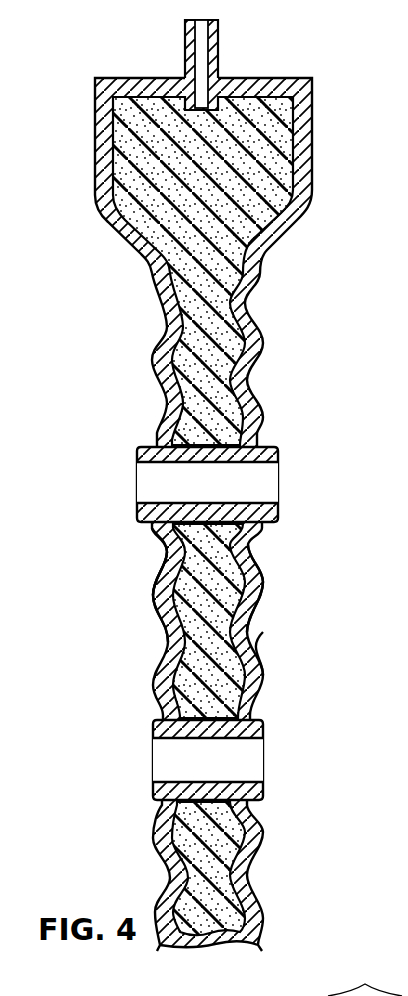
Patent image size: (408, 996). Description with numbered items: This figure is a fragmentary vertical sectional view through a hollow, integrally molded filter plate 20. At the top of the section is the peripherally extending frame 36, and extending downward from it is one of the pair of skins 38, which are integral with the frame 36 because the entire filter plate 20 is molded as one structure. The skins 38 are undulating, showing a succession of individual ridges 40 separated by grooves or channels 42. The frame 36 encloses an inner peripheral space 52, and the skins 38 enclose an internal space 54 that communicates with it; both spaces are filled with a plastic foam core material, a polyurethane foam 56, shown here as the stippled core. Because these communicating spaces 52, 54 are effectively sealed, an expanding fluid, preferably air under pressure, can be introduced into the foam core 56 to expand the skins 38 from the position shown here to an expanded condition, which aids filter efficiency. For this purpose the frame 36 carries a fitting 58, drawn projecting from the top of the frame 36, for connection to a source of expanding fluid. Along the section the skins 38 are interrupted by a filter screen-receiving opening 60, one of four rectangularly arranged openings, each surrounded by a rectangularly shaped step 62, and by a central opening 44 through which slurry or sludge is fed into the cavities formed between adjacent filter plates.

The filter plate 20 is at (365, 980).
The frame 36 is at (147, 78).
The skins 38 is at (128, 240).
The ridges 40 is at (262, 600).
The grooves or channels 42 is at (168, 567).
The central opening 44 is at (255, 762).
The inner peripheral space 52 is at (283, 78).
The internal space 54 is at (190, 643).
The polyurethane foam 56 is at (218, 158).
The fitting 58 is at (215, 22).
The filter screen-receiving opening 60 is at (143, 482).
The step 62 is at (150, 443).